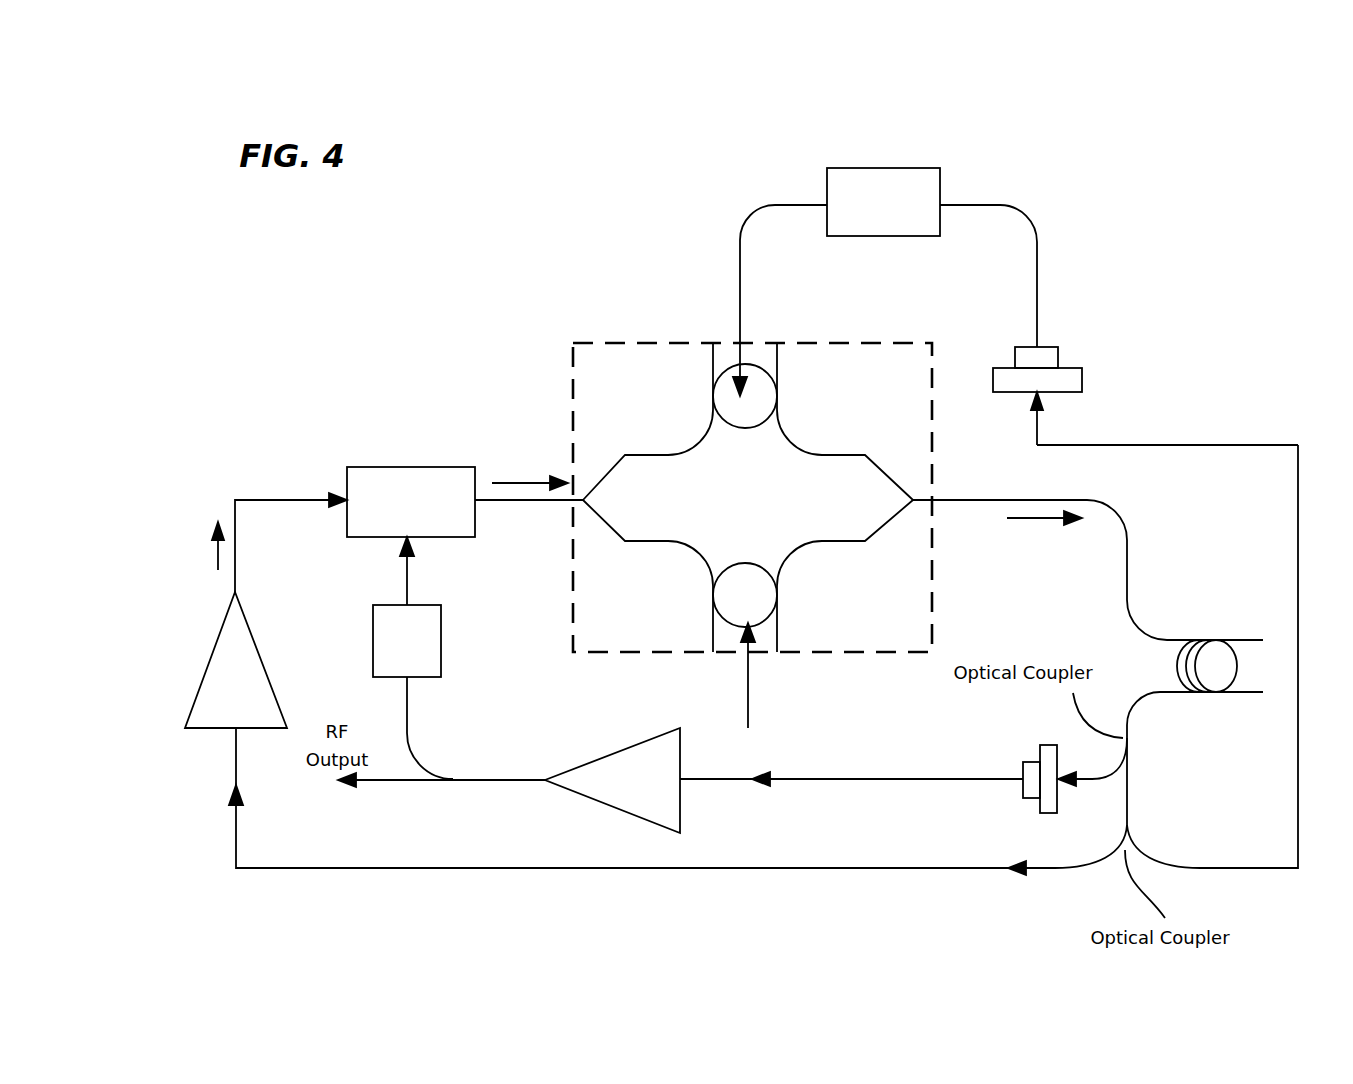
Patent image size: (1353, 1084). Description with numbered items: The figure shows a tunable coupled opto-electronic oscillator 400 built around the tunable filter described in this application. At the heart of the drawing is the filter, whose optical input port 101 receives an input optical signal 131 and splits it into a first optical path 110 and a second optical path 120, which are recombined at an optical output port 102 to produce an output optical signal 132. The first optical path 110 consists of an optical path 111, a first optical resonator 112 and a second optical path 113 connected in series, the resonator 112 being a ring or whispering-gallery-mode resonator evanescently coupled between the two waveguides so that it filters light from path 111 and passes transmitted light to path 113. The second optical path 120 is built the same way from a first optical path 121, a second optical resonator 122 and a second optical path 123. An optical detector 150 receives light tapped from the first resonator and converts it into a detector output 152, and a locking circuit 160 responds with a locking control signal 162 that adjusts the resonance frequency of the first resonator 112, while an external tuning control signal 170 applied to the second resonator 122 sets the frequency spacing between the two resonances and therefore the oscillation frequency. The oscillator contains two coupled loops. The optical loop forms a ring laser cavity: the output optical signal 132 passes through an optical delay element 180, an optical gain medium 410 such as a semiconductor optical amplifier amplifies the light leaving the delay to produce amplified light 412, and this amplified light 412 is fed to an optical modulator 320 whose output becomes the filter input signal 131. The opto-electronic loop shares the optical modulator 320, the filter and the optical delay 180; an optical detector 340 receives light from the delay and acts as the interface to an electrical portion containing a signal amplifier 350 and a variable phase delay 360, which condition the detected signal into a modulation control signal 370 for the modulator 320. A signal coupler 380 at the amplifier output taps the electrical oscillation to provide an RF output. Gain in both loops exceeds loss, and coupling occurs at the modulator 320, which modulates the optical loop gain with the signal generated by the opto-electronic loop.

The tunable coupled opto-electronic oscillator 400 is at (528, 262).
The optical input port 101 is at (580, 503).
The optical output port 102 is at (915, 503).
The first optical path 110 is at (748, 421).
The optical path 111 is at (663, 455).
The first optical resonator 112 is at (745, 428).
The second optical path 113 is at (800, 440).
The second optical path 120 is at (748, 610).
The first optical path 121 is at (663, 543).
The second optical resonator 122 is at (730, 627).
The second optical path 123 is at (808, 545).
The input optical signal 131 is at (518, 482).
The output optical signal 132 is at (1127, 499).
The optical detector 150 is at (1062, 357).
The detector output 152 is at (1017, 208).
The locking circuit 160 is at (885, 168).
The locking control signal 162 is at (738, 272).
The tuning control signal 170 is at (748, 667).
The optical delay element 180 is at (1220, 674).
The optical modulator 320 is at (390, 467).
The optical detector 340 is at (1023, 798).
The signal amplifier 350 is at (612, 780).
The variable phase delay 360 is at (441, 648).
The modulation control signal 370 is at (407, 582).
The signal coupler 380 is at (453, 783).
The optical gain medium 410 is at (252, 658).
The amplified light 412 is at (213, 553).